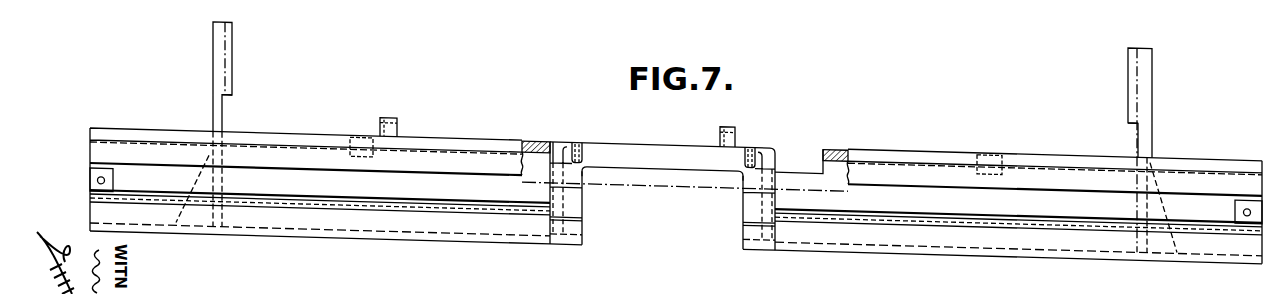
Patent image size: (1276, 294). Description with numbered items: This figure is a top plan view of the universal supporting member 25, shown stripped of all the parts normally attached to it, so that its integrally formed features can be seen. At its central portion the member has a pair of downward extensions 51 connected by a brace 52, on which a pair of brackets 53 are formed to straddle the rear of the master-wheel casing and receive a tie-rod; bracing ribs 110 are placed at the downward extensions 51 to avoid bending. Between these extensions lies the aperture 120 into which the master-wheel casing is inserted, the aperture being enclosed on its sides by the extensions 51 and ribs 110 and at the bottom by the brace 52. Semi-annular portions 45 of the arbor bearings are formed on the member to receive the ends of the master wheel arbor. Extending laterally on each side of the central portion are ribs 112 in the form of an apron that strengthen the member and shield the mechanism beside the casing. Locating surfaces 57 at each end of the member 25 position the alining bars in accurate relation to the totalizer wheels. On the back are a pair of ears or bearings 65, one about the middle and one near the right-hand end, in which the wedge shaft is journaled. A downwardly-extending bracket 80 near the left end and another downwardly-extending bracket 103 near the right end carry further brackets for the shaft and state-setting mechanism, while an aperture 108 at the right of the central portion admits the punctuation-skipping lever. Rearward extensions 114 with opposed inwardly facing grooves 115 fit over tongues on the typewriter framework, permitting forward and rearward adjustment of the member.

The universal supporting member 25 is at (512, 117).
The semi-annular portions 45 is at (580, 206).
The downward extensions 51 is at (558, 229).
The brace 52 is at (660, 162).
The brackets 53 is at (580, 129).
The locating surfaces 57 is at (90, 178).
The ears or bearings 65 is at (398, 117).
The downwardly-extending bracket 80 is at (982, 144).
The downwardly-extending bracket 103 is at (352, 142).
The aperture 108 is at (807, 132).
The bracing ribs 110 is at (553, 166).
The ribs 112 is at (297, 229).
The rearward extensions or brackets 114 is at (213, 47).
The grooves 115 is at (228, 99).
The aperture 120 is at (660, 209).